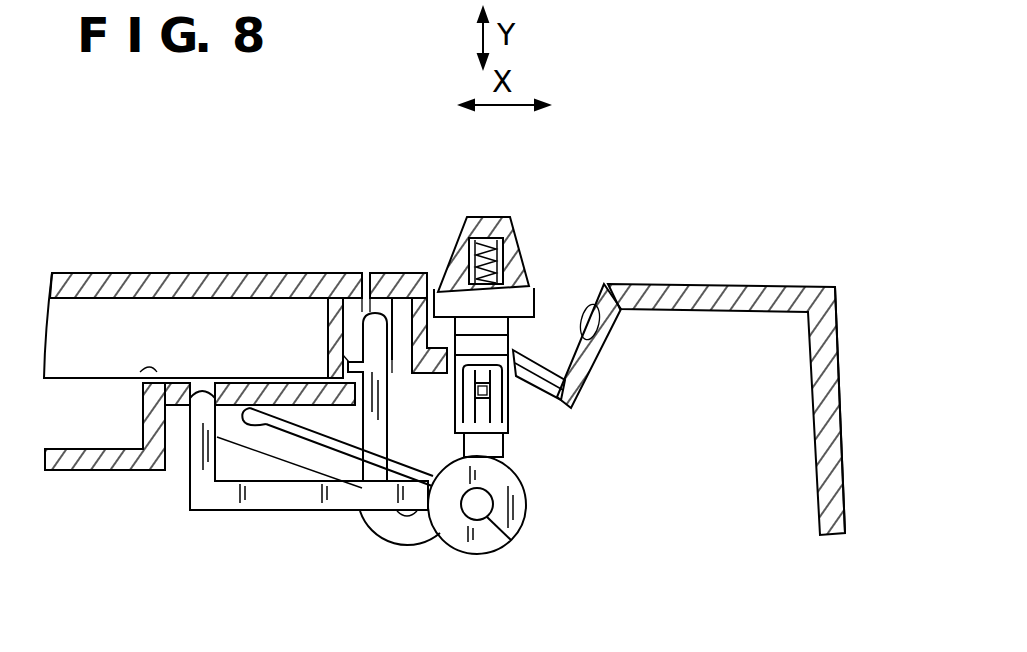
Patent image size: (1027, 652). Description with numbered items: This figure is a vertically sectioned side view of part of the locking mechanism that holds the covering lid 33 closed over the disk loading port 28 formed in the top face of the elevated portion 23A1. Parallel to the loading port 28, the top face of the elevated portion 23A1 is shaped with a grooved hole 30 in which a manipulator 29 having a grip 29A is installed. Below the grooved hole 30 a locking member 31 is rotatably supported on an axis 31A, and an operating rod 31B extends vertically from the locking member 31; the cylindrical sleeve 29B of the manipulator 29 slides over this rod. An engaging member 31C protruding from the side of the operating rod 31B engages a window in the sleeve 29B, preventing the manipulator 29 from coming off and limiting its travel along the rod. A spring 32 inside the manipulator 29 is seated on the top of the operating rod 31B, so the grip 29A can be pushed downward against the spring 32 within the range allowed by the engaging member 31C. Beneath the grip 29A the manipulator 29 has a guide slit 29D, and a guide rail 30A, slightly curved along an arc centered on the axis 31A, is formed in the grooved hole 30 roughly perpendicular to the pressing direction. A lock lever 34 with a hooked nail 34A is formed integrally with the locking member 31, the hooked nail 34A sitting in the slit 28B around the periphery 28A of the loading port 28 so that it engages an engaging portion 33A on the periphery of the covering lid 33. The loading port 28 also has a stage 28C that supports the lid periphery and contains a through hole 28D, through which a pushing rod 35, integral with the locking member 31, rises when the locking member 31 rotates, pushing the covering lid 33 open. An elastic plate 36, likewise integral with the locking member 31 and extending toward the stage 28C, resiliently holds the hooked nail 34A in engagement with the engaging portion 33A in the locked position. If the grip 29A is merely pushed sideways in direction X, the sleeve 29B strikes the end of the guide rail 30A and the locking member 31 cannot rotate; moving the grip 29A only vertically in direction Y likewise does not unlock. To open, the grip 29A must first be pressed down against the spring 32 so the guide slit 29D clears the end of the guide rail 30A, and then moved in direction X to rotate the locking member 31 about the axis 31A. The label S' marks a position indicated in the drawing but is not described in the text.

The elevated portion 23A1 is at (846, 352).
The loading port 28 is at (218, 325).
The periphery of the loading port 28A is at (366, 313).
The slit 28B is at (392, 362).
The stage 28C is at (140, 372).
The through hole 28D is at (232, 390).
The manipulator 29 is at (523, 220).
The grip 29A is at (492, 215).
The cylindrical sleeve 29B is at (473, 367).
The guide slit 29D is at (468, 340).
The grooved hole 30 is at (607, 300).
The guide rail 30A is at (537, 388).
The locking member 31 is at (453, 552).
The axis 31A is at (510, 542).
The operating rod 31B is at (490, 448).
The engaging member 31C is at (505, 418).
The spring 32 is at (500, 262).
The covering lid 33 is at (146, 266).
The engaging portion 33A is at (344, 355).
The lock lever 34 is at (395, 540).
The hooked nail 34A is at (348, 365).
The pushing rod 35 is at (198, 467).
The elastic plate 36 is at (297, 435).
The sheet S' is at (726, 359).